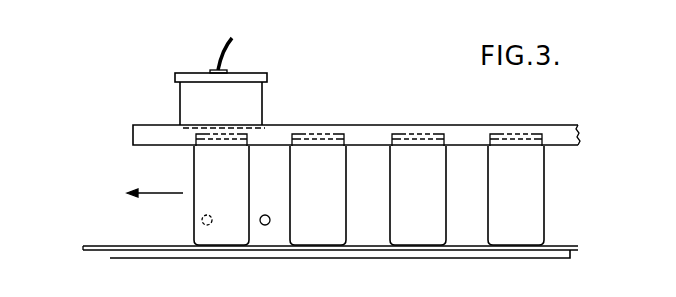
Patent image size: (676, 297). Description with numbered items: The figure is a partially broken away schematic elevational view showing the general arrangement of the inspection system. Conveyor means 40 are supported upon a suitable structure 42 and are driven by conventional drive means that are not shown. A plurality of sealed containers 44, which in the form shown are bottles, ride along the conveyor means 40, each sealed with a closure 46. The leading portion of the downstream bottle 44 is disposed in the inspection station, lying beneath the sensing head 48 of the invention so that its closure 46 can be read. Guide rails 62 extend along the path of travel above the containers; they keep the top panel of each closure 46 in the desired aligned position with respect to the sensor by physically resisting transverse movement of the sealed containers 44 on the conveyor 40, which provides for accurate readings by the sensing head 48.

The conveyor means 40 is at (104, 245).
The supporting structure 42 is at (112, 257).
The sealed containers 44 is at (300, 176).
The closures 46 is at (208, 147).
The sensing head 48 is at (232, 111).
The guide rails 62 is at (582, 137).